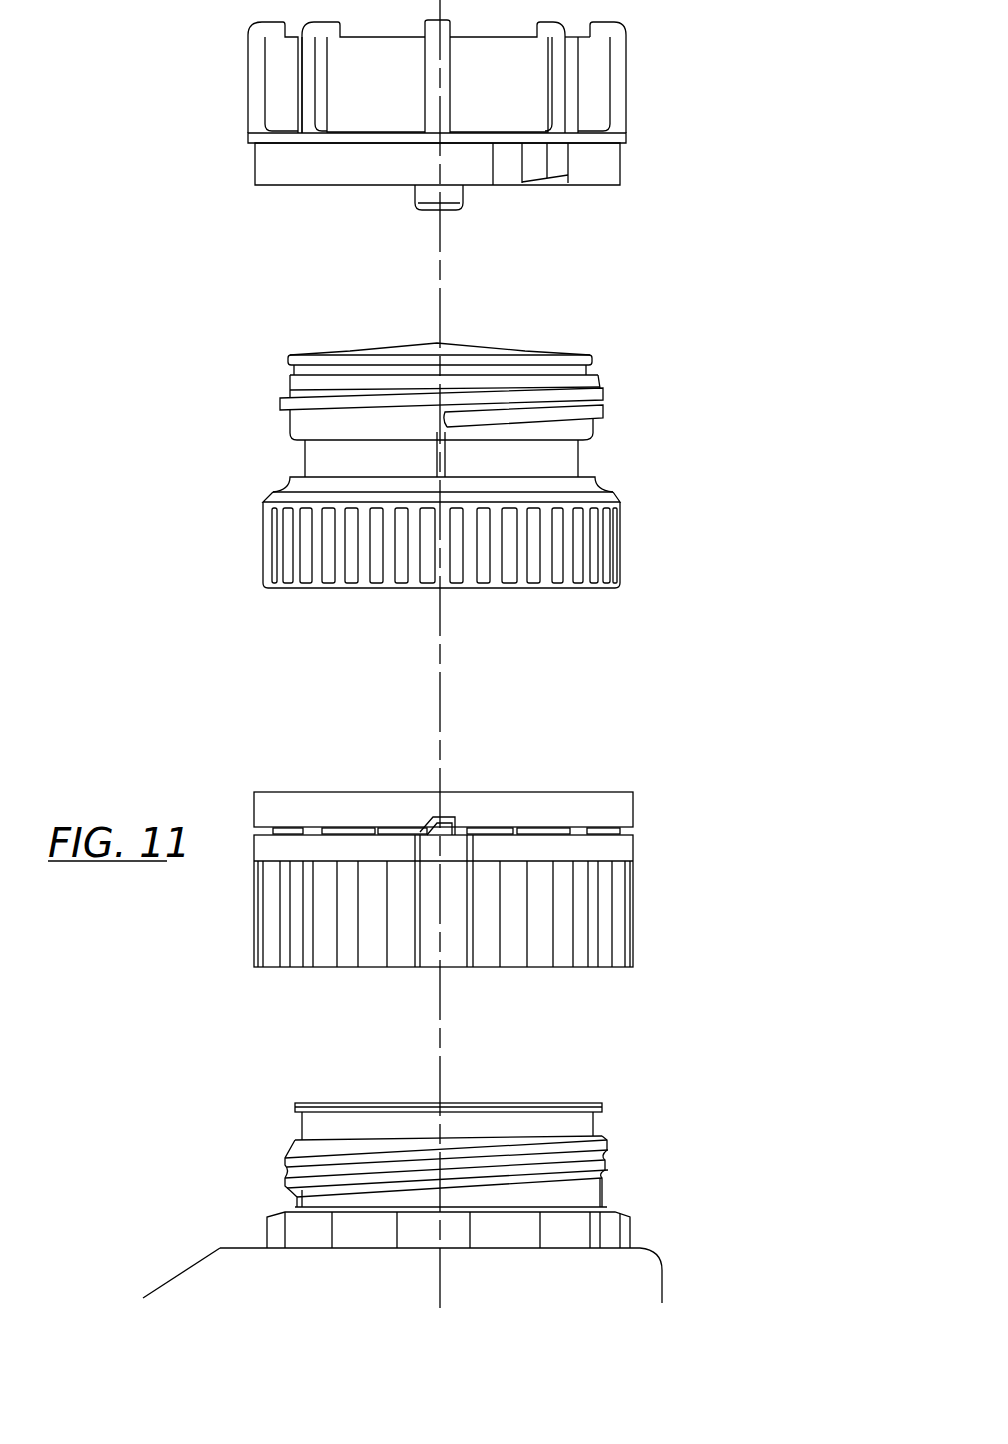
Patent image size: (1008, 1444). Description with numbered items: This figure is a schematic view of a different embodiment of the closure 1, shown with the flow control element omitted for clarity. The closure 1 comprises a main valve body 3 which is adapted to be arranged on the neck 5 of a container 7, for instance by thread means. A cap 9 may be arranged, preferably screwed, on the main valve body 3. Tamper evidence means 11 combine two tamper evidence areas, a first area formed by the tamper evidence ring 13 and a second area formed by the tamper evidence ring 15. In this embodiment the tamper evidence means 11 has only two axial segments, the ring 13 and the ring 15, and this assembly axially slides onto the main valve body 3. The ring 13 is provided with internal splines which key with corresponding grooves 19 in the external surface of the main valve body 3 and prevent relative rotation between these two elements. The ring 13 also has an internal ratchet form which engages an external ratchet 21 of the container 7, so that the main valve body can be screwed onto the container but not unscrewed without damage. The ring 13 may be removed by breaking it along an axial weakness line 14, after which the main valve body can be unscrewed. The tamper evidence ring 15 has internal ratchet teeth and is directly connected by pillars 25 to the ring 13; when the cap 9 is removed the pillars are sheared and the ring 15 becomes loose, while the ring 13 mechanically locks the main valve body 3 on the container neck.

The closure 1 is at (455, 490).
The main valve body 3 is at (310, 462).
The neck 5 is at (585, 1127).
The container 7 is at (684, 1286).
The cap 9 is at (625, 112).
The tamper evidence means 11 is at (507, 936).
The tamper evidence ring 13 is at (637, 957).
The axial weakness line 14 is at (418, 945).
The tamper evidence ring 15 is at (610, 807).
The grooves 19 is at (555, 587).
The external ratchet 21 is at (628, 1223).
The pillars 25 is at (620, 829).